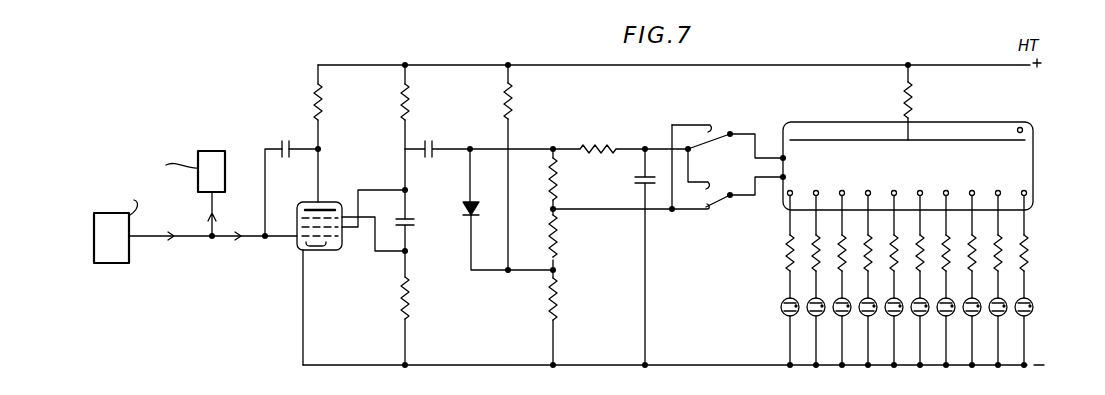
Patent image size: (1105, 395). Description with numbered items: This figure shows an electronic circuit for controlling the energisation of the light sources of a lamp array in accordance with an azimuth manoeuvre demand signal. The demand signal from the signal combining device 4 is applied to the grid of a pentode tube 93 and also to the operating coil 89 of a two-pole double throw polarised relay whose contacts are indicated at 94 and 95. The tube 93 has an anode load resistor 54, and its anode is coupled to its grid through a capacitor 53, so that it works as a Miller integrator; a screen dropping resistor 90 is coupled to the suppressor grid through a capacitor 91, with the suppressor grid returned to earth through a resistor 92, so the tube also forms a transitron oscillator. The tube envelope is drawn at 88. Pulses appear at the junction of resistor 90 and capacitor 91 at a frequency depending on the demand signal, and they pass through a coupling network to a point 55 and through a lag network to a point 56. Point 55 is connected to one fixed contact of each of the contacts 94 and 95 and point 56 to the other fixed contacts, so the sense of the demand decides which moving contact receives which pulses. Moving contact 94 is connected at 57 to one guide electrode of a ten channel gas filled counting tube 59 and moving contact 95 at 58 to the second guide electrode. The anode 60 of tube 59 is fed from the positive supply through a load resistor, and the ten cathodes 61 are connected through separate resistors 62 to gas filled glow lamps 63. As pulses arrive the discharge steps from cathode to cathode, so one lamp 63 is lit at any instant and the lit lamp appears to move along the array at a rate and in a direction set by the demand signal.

The signal combining device 4 is at (115, 237).
The capacitor 53 is at (287, 159).
The anode load resistor 54 is at (333, 106).
The point 55 is at (673, 212).
The point 56 is at (649, 248).
The guide electrode terminal 57 is at (756, 148).
The guide electrode terminal 58 is at (756, 189).
The counting tube 59 is at (811, 138).
The anode 60 is at (997, 139).
The cathodes 61 is at (977, 190).
The resistors 62 is at (1029, 247).
The gas filled glow lamps 63 is at (1030, 316).
The valve 88 is at (302, 248).
The operating coil 89 is at (213, 157).
The screen dropping resistor 90 is at (413, 106).
The capacitor 91 is at (413, 222).
The resistor 92 is at (406, 300).
The pentode tube 93 is at (331, 248).
The relay contact 94 is at (716, 129).
The relay contact 95 is at (712, 212).